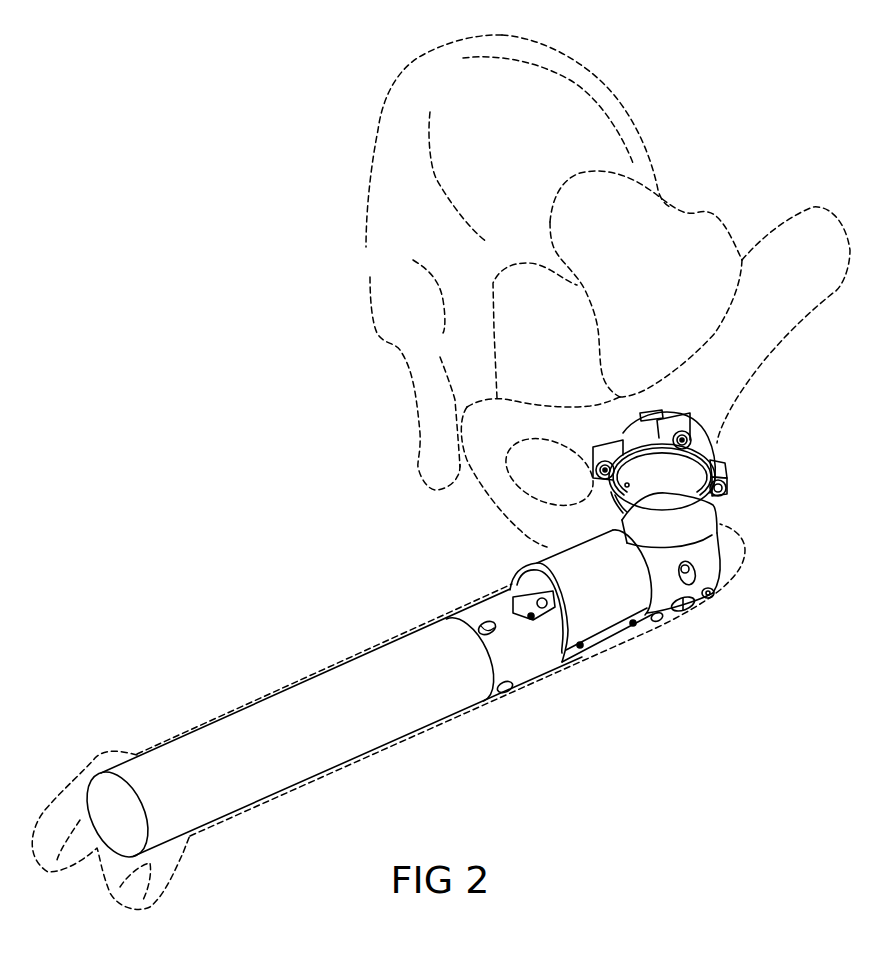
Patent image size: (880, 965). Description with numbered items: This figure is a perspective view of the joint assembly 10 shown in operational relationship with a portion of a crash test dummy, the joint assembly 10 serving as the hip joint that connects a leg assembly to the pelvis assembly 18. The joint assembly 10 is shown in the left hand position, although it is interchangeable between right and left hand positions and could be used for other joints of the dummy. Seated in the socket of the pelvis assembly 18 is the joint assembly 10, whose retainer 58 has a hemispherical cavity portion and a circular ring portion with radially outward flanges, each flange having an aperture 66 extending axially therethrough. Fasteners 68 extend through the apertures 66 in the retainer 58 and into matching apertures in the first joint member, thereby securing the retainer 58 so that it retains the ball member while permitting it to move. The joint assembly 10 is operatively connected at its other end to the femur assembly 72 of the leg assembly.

The joint assembly 10 is at (752, 481).
The pelvis assembly 18 is at (616, 84).
The retainer 58 is at (623, 432).
The aperture 66 is at (727, 462).
The fasteners 68 is at (723, 506).
The femur assembly 72 is at (537, 688).